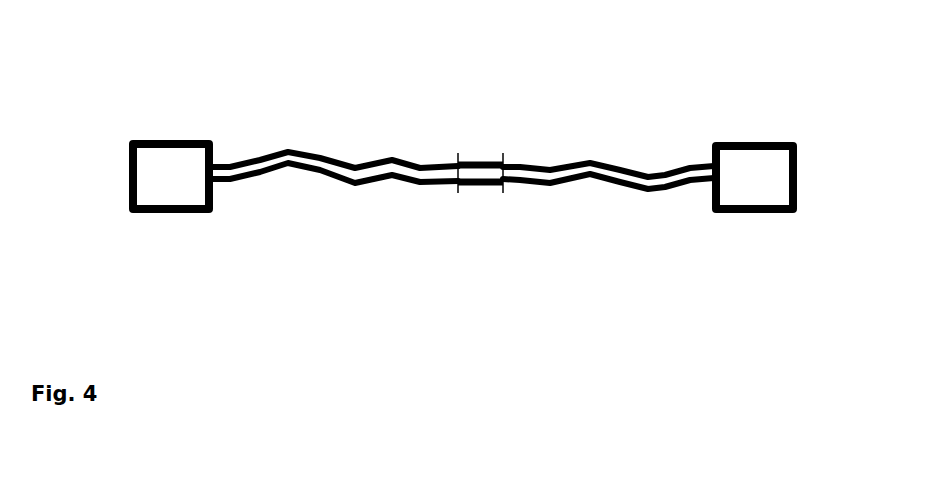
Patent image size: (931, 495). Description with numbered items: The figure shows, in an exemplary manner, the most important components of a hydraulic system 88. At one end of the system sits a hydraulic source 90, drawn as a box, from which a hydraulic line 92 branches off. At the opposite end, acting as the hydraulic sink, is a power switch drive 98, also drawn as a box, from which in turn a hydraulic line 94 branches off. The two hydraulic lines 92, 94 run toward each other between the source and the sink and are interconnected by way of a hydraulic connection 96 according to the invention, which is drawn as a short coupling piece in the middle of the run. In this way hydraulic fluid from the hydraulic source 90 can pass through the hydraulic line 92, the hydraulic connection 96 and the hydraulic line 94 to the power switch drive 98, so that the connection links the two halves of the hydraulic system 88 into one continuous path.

The hydraulic system 88 is at (462, 158).
The hydraulic source 90 is at (155, 140).
The hydraulic line 92 is at (333, 157).
The hydraulic line 94 is at (660, 172).
The hydraulic connection 96 is at (478, 162).
The power switch drive 98 is at (758, 140).